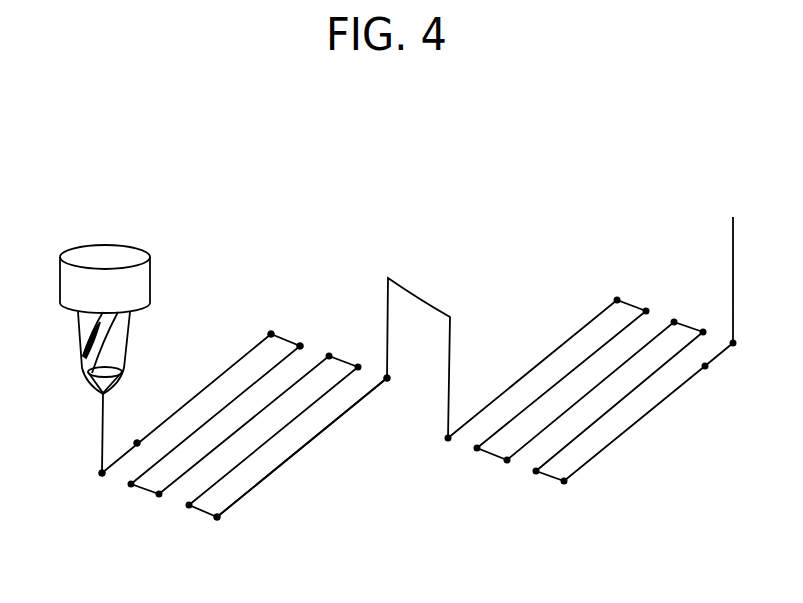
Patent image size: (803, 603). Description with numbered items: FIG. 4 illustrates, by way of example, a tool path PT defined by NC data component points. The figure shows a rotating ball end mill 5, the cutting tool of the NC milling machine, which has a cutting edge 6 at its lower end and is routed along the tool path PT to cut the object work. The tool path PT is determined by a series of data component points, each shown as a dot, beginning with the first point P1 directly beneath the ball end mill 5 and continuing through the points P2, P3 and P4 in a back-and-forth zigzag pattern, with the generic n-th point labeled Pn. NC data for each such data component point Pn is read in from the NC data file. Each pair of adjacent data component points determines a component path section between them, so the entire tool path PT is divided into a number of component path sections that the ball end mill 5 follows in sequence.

The ball end mill 5 is at (150, 265).
The cutting edge 6 is at (87, 392).
The tool path PT is at (372, 300).
The data component point P1 is at (97, 483).
The data component point P2 is at (137, 441).
The data component point P3 is at (270, 333).
The data component point P4 is at (300, 344).
The data component point Pn is at (219, 519).